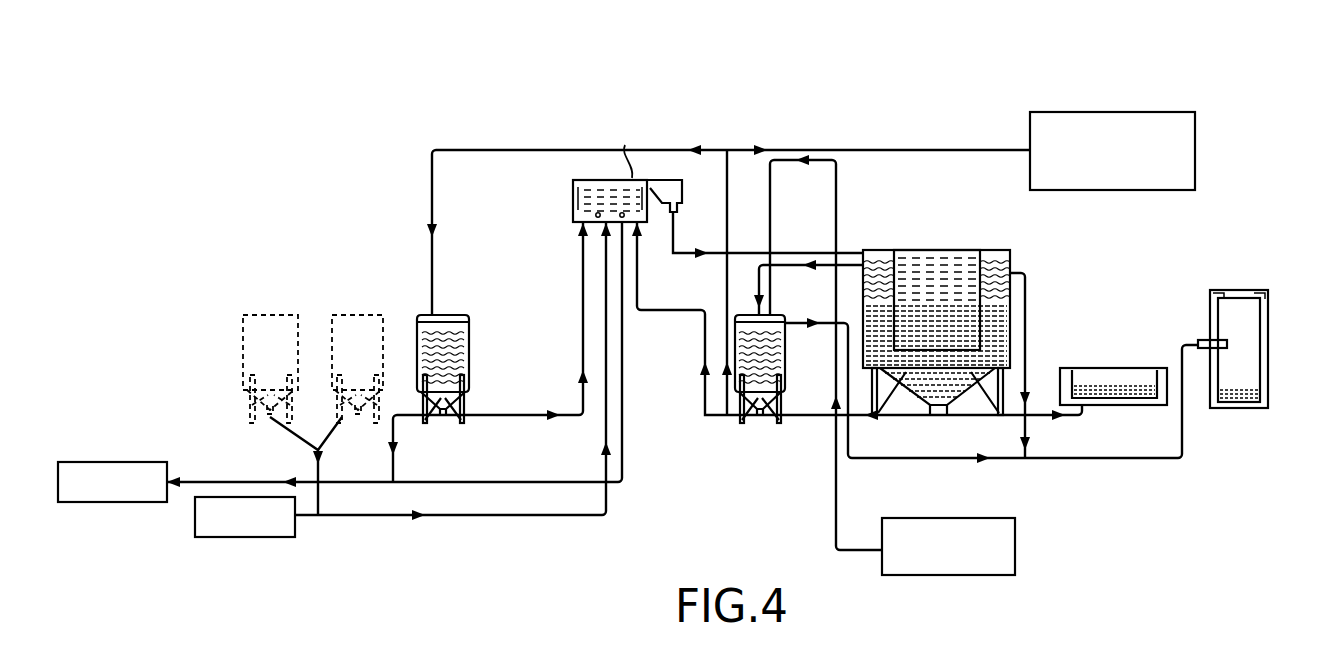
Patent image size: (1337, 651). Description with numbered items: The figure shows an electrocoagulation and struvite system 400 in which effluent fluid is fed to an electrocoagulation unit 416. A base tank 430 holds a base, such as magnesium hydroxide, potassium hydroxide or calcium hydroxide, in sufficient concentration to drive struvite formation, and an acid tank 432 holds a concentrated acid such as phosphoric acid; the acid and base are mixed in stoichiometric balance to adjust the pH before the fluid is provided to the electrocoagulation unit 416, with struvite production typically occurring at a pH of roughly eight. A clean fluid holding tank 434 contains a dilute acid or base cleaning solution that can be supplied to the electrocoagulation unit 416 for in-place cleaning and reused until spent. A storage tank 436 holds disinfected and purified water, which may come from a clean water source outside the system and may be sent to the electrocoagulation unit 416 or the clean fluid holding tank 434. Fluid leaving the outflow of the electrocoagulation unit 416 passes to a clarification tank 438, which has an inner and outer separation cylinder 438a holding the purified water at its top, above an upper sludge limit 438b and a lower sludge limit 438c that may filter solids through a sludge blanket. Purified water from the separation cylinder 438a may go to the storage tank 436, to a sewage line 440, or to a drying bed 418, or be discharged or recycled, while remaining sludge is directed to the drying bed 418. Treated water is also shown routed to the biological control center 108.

The electrocoagulation and struvite system 400 is at (889, 66).
The electrocoagulation unit 416 is at (687, 188).
The biological control center 108 is at (1195, 152).
The base tank 430 is at (247, 315).
The acid tank 432 is at (340, 315).
The clean fluid holding tank 434 is at (454, 315).
The storage tank 436 is at (750, 317).
The clarification tank 438 is at (965, 250).
The inner and outer separation cylinder 438a is at (990, 277).
The upper sludge limit 438b is at (1010, 298).
The lower sludge limit 438c is at (1010, 325).
The drying bed 418 is at (1122, 373).
The sewage line 440 is at (1257, 320).